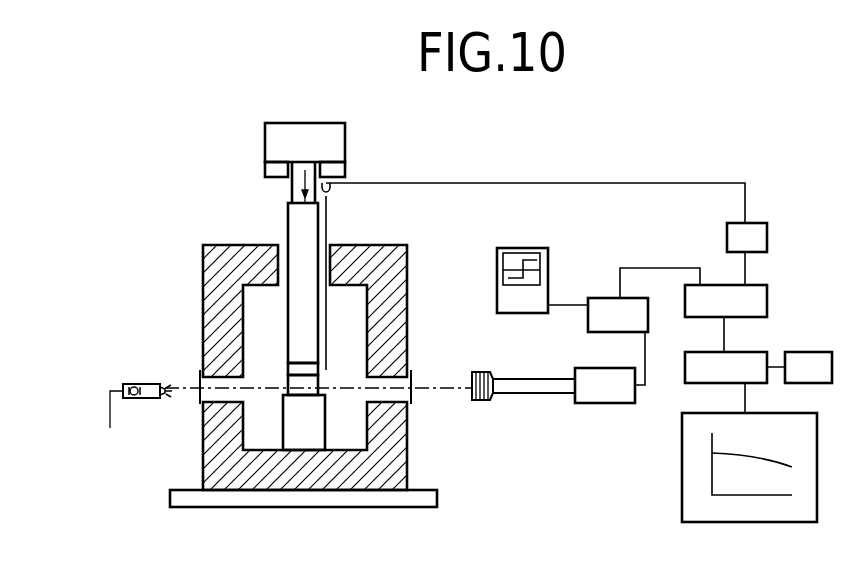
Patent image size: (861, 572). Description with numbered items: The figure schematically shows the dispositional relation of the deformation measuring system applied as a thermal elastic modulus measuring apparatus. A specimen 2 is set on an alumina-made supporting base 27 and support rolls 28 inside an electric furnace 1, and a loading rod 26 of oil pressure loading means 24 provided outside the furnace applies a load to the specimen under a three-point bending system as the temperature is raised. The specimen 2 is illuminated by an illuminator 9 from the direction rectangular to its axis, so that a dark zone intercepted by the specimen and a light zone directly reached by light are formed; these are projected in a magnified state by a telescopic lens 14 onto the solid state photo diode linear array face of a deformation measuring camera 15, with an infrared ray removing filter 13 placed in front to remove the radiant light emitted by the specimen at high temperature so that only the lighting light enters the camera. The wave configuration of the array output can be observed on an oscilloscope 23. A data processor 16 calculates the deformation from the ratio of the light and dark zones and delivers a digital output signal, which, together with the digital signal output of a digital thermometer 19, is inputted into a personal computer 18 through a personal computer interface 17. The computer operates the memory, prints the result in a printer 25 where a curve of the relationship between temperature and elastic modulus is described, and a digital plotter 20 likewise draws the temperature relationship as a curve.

The electric furnace 1 is at (407, 268).
The specimen 2 is at (320, 380).
The illuminator 9 is at (146, 384).
The infrared ray removing filter 13 is at (476, 368).
The telescopic lens 14 is at (545, 377).
The deformation measuring camera 15 is at (597, 368).
The data processor 16 is at (607, 302).
The personal computer interface 17 is at (753, 296).
The personal computer 18 is at (753, 362).
The digital thermometer 19 is at (757, 232).
The digital plotter 20 is at (698, 418).
The oscilloscope 23 is at (523, 248).
The oil pressure loading means 24 is at (337, 143).
The printer 25 is at (822, 362).
The loading rod 26 is at (292, 320).
The supporting base 27 is at (325, 430).
The support roll 28 is at (325, 390).